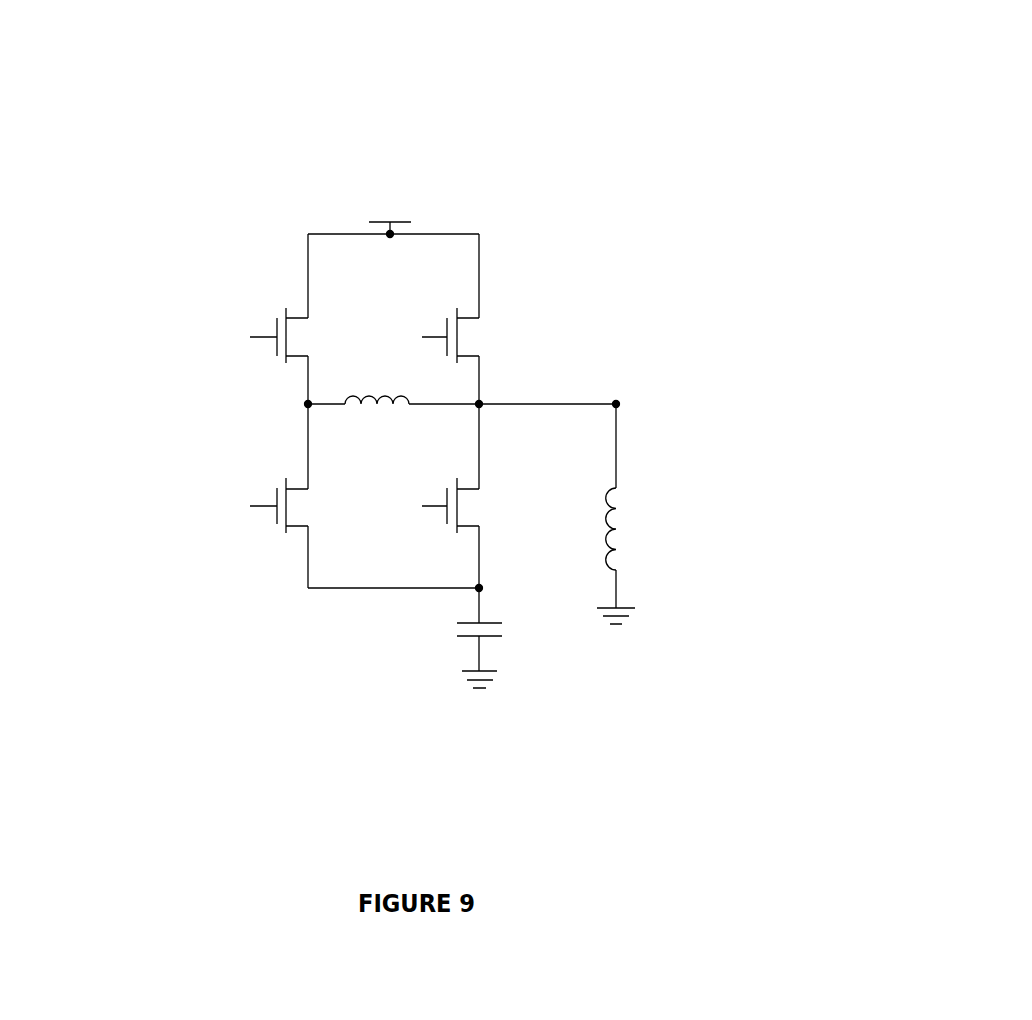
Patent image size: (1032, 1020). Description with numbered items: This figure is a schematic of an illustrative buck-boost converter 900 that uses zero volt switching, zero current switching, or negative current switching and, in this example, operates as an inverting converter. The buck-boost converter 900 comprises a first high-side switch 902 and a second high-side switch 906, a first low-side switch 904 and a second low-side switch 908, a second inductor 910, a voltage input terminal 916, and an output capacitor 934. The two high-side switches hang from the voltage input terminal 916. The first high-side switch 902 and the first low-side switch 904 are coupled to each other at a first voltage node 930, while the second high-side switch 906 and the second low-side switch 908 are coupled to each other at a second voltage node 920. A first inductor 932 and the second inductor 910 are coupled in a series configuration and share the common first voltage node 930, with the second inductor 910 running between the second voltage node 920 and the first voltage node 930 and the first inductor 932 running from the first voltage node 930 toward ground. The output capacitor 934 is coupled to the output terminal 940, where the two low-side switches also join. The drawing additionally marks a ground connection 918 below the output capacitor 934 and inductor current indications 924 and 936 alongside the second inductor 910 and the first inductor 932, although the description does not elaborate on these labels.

The buck-boost converter 900 is at (887, 94).
The high-side switch DHA 902 is at (480, 332).
The low-side switch DLA 904 is at (466, 510).
The high-side switch DHB 906 is at (258, 325).
The low-side switch DLB 908 is at (258, 500).
The inductor L2 910 is at (378, 437).
The voltage input terminal 916 is at (390, 192).
The ground 918 is at (468, 665).
The voltage node LXB 920 is at (306, 400).
The inductor current IL2 924 is at (435, 390).
The voltage node LXA 930 is at (481, 400).
The inductor L1 932 is at (618, 528).
The output capacitor COUT 934 is at (492, 640).
The inductor current IL1 936 is at (636, 435).
The output terminal 940 is at (483, 583).